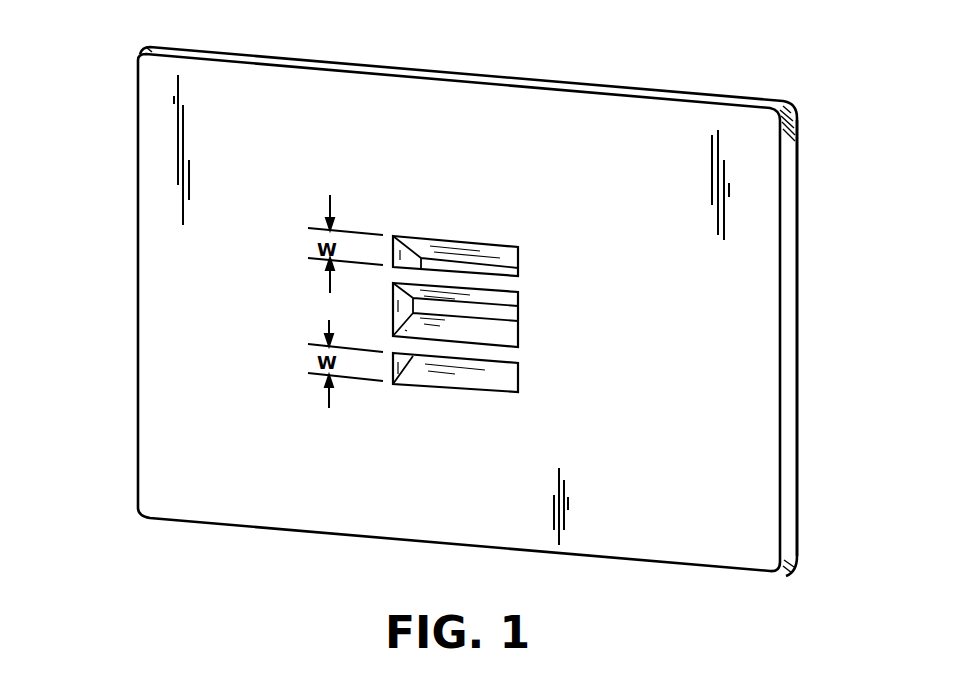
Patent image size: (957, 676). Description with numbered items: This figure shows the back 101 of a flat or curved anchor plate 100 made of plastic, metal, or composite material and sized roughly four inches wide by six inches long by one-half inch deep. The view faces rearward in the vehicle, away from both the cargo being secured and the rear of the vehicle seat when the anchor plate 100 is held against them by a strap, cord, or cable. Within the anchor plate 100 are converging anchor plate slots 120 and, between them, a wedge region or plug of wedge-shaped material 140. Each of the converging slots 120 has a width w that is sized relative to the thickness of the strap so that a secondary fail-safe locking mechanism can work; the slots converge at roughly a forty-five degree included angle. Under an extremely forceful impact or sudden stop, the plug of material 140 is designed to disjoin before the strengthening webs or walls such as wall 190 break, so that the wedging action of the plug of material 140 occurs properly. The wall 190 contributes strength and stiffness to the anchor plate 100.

The anchor plate 100 is at (771, 96).
The back 101 is at (131, 422).
The converging anchor plate slots 120 is at (518, 269).
The plug of wedge-shaped material 140 is at (518, 330).
The wall 190 is at (788, 460).